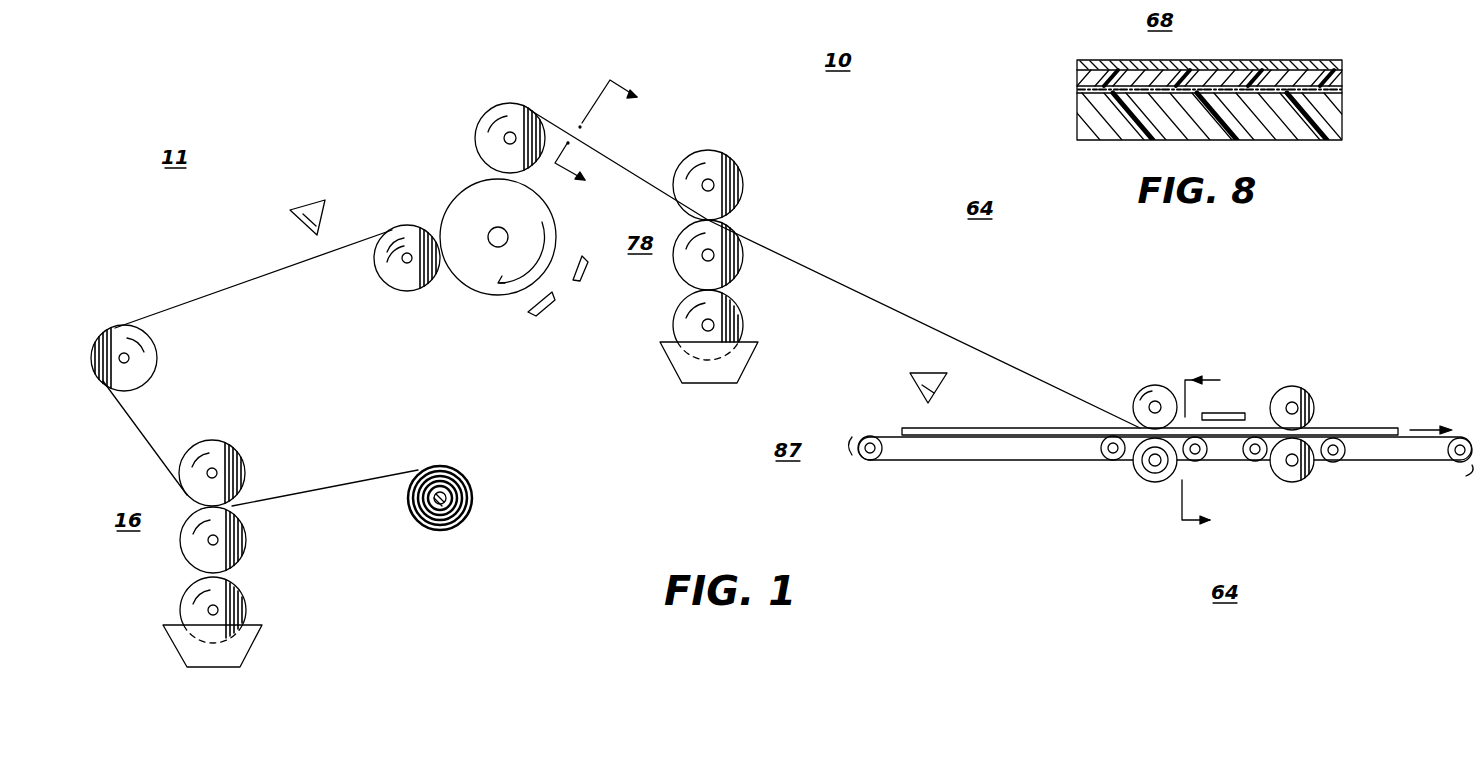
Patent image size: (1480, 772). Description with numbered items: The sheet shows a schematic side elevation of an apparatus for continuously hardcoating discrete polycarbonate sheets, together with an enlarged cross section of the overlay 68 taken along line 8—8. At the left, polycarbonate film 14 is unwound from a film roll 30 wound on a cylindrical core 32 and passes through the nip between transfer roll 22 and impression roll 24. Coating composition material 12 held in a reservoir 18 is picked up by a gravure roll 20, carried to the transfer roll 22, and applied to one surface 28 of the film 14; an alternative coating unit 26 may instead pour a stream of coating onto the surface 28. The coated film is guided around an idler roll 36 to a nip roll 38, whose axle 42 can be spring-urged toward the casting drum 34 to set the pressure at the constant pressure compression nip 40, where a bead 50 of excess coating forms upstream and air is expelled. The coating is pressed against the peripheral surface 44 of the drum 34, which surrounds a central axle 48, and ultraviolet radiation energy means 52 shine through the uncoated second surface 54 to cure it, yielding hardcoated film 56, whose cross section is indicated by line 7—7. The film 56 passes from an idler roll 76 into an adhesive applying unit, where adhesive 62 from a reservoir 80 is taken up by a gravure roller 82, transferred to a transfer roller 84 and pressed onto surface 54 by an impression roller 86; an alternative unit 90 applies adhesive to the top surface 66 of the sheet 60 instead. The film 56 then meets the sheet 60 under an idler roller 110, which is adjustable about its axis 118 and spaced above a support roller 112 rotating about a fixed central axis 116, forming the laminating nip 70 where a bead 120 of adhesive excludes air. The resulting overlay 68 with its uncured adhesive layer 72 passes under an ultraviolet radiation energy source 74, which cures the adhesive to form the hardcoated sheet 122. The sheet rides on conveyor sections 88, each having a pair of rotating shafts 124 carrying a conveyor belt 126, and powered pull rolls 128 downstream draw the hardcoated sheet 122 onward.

In FIG. 1, the coating composition material 12 is at (300, 224).
In FIG. 1, the polycarbonate film 14 is at (495, 296).
In FIG. 1, the reservoir 18 is at (188, 660).
In FIG. 1, the gravure roll 20 is at (246, 605).
In FIG. 1, the transfer roll 22 is at (244, 540).
In FIG. 1, the impression roll 24 is at (240, 458).
In FIG. 1, the coating unit 26 is at (303, 203).
In FIG. 1, the one surface 28 is at (206, 290).
In FIG. 1, the film roll 30 is at (472, 498).
In FIG. 1, the cylindrical core 32 is at (443, 505).
In FIG. 1, the casting drum 34 is at (470, 190).
In FIG. 1, the idler roll 36 is at (157, 358).
In FIG. 1, the nip roll 38 is at (398, 290).
In FIG. 1, the constant pressure compression nip 40 is at (432, 288).
In FIG. 1, the axle 42 is at (382, 262).
In FIG. 1, the peripheral surface 44 is at (452, 200).
In FIG. 1, the central axle 48 is at (498, 228).
In FIG. 1, the bead 50 is at (440, 248).
In FIG. 1, the ultraviolet radiation energy means 52 is at (583, 264).
In FIG. 1, the uncoated second surface 54 is at (236, 287).
In FIG. 1, the hardcoated polycarbonate film 56 is at (524, 124).
In FIG. 8, the hardcoated polycarbonate film 56 is at (1077, 78).
In FIG. 1, the polycarbonate sheet substrate 60 is at (900, 430).
In FIG. 8, the polycarbonate sheet substrate 60 is at (1087, 118).
In FIG. 1, the adhesive 62 is at (752, 355).
In FIG. 1, the top surface 66 is at (905, 428).
In FIG. 8, the overlay 68 is at (1212, 100).
In FIG. 1, the laminating nip 70 is at (1180, 426).
In FIG. 8, the uncured adhesive layer 72 is at (1077, 90).
In FIG. 1, the ultraviolet radiation energy source 74 is at (1236, 412).
In FIG. 1, the idler roll 76 is at (532, 170).
In FIG. 1, the reservoir 80 is at (665, 362).
In FIG. 1, the gravure roller 82 is at (742, 320).
In FIG. 1, the transfer roller 84 is at (676, 272).
In FIG. 1, the impression roller 86 is at (743, 185).
In FIG. 1, the conveyor sections 88 is at (1058, 461).
In FIG. 1, the adhesive applying unit 90 is at (928, 372).
In FIG. 1, the idler roller 110 is at (1138, 395).
In FIG. 1, the support roller 112 is at (1138, 478).
In FIG. 1, the central axis 116 is at (1153, 472).
In FIG. 1, the axis 118 is at (1156, 400).
In FIG. 1, the bead 120 is at (1122, 428).
In FIG. 1, the hardcoated sheet 122 is at (1380, 430).
In FIG. 1, the rotating shafts 124 is at (884, 455).
In FIG. 1, the conveyor belt 126 is at (1010, 461).
In FIG. 1, the pull rolls 128 is at (1300, 388).
In FIG. 1, the line 7— 7 is at (606, 135).
In FIG. 1, the line 8— 8 is at (1201, 452).